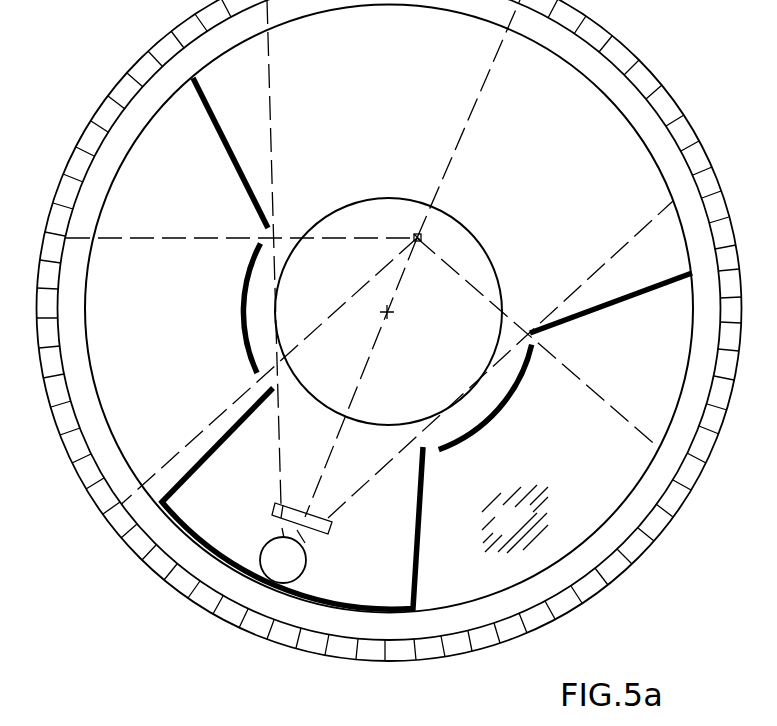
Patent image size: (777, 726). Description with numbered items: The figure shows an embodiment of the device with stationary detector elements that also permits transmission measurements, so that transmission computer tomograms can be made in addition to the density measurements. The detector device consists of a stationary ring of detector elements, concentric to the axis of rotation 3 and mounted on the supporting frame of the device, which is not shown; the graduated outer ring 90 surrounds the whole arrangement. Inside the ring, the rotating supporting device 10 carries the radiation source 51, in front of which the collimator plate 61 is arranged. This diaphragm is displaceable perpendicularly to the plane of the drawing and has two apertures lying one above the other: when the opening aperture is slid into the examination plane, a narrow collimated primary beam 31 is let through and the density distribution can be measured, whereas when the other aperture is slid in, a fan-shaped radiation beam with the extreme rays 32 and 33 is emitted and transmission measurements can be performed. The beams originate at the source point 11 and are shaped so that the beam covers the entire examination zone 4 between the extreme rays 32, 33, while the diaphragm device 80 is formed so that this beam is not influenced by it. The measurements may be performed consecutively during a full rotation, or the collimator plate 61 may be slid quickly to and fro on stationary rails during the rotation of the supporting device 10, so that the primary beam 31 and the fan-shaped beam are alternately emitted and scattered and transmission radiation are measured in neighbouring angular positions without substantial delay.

The axis of rotation 3 is at (391, 315).
The examination zone 4 is at (501, 291).
The supporting device 10 is at (515, 519).
The light source point 11 is at (423, 236).
The primary beam 31 is at (440, 180).
The extreme ray 32 is at (273, 191).
The extreme ray 33 is at (601, 272).
The radiation source 51 is at (307, 560).
The collimator plate 61 is at (333, 530).
The diaphragm device 80 is at (245, 183).
The graduated scale ring 90 is at (603, 589).